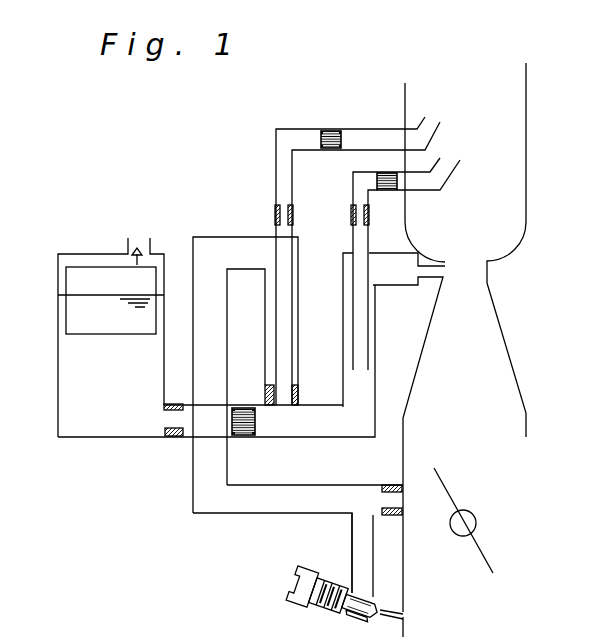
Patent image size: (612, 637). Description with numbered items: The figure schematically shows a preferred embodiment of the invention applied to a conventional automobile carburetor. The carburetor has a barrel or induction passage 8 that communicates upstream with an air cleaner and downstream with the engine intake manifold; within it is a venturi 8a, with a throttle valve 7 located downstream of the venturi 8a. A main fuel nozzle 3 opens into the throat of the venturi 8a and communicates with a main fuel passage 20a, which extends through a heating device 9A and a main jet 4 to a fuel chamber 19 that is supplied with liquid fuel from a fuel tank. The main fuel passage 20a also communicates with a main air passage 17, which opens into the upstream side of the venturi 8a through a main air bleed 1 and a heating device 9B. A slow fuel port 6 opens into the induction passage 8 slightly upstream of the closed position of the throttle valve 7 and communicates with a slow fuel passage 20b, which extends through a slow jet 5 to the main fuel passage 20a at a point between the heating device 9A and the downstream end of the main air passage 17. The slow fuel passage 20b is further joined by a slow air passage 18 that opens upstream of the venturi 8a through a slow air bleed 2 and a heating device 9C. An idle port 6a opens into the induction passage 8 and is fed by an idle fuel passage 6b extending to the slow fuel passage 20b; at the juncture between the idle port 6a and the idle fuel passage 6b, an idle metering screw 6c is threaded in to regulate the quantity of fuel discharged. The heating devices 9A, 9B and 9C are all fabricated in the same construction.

The main air bleed 1 is at (354, 211).
The slow air bleed 2 is at (277, 211).
The main fuel nozzle 3 is at (441, 264).
The main jet 4 is at (180, 434).
The slow jet 5 is at (272, 388).
The slow fuel port 6 is at (392, 518).
The idle port 6a is at (405, 618).
The idle fuel passage 6b is at (353, 537).
The idle metering screw 6c is at (322, 600).
The throttle valve 7 is at (451, 494).
The induction passage 8 is at (507, 372).
The venturi 8a is at (491, 272).
The heating device 9A is at (250, 444).
The heating device 9B is at (391, 198).
The heating device 9C is at (336, 124).
The main air passage 17 is at (352, 251).
The slow air passage 18 is at (278, 136).
The fuel chamber 19 is at (98, 430).
The main fuel passage 20a is at (336, 440).
The slow fuel passage 20b is at (228, 320).